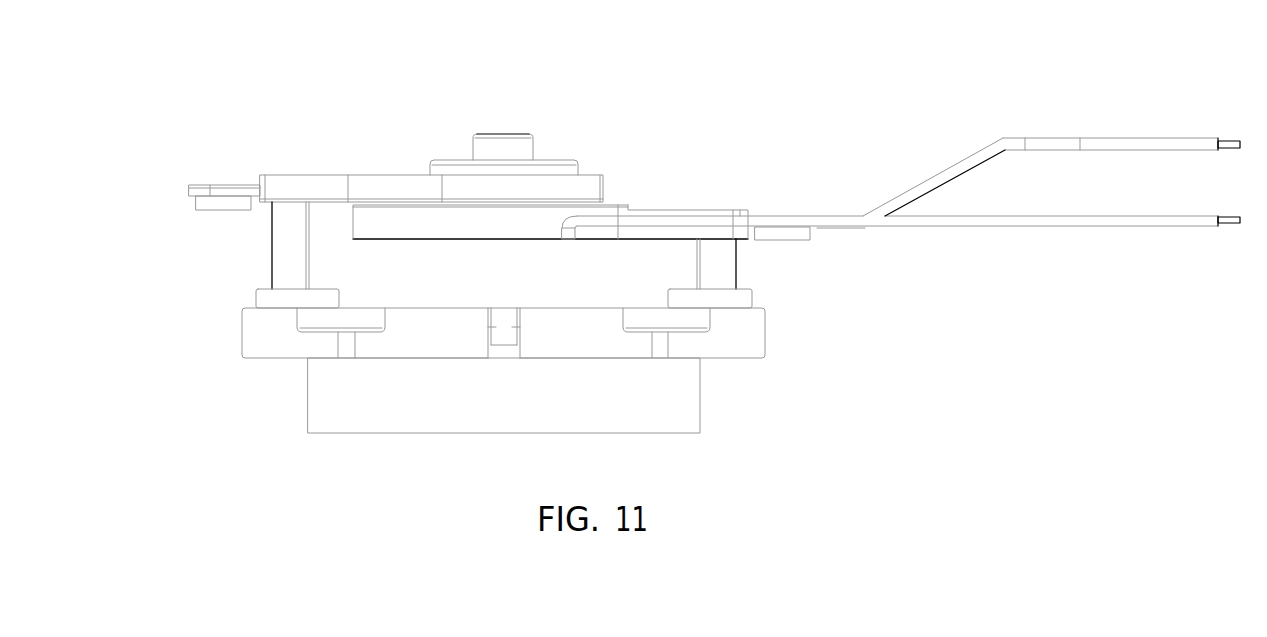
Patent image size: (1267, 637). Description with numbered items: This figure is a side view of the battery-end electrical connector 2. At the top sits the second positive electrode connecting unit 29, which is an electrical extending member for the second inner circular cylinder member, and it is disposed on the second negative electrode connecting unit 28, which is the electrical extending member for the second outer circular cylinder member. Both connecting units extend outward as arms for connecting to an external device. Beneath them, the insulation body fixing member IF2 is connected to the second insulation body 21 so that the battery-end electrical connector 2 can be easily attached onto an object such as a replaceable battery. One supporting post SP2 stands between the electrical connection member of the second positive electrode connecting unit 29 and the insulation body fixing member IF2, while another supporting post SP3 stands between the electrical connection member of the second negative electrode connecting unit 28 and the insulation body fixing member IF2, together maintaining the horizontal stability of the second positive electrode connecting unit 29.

The battery-end electrical connector 2 is at (189, 100).
The second positive electrode connecting unit 29 is at (398, 172).
The second negative electrode connecting unit 28 is at (343, 227).
The supporting post SP2 is at (285, 263).
The supporting post SP3 is at (722, 263).
The insulation body fixing member IF2 is at (769, 349).
The second insulation body 21 is at (292, 408).